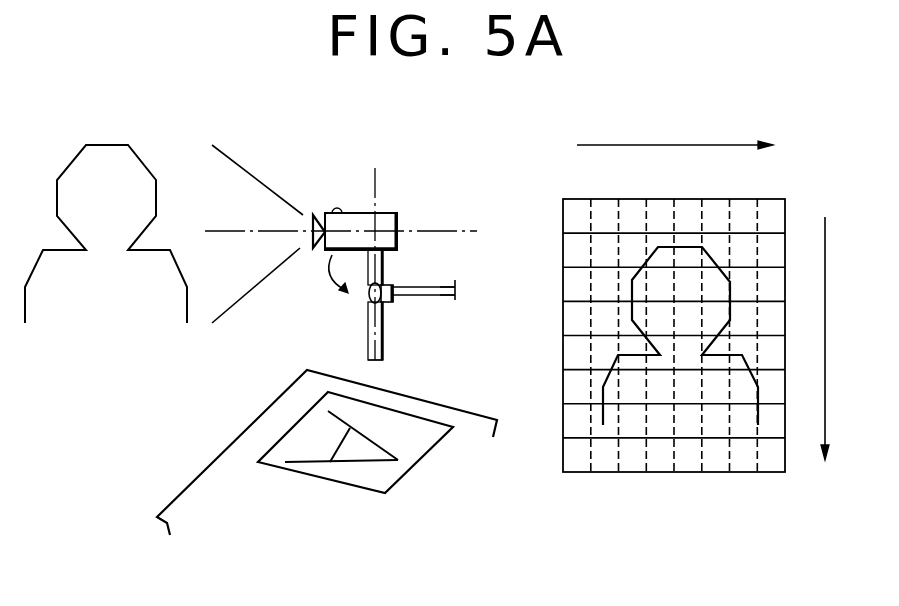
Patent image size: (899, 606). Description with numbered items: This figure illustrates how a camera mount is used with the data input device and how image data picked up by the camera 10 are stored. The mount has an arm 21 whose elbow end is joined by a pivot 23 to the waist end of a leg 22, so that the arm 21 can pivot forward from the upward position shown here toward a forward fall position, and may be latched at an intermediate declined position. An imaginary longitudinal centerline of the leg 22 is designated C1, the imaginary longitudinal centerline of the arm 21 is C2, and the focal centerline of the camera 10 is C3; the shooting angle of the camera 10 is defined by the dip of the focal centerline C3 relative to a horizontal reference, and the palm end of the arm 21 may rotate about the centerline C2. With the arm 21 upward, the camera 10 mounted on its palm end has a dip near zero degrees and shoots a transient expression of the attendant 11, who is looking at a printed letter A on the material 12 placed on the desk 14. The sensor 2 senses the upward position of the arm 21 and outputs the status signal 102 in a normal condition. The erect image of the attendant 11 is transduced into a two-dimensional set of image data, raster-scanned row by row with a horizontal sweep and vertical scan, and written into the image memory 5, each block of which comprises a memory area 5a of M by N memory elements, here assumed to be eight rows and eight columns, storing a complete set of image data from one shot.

The camera 10 is at (350, 212).
The attendant 11 is at (107, 298).
The material 12 is at (318, 478).
The desk 14 is at (188, 488).
The sensor 2 is at (450, 287).
The arm 21 is at (383, 265).
The leg 22 is at (383, 338).
The pivot 23 is at (371, 294).
The status signal 102 is at (447, 297).
The imaginary longitudinal centerline of the leg C1 is at (403, 362).
The imaginary longitudinal centerline of the arm C2 is at (375, 193).
The focal centerline of the camera C3 is at (250, 232).
The image memory 5 is at (586, 483).
The memory area 5a is at (693, 473).